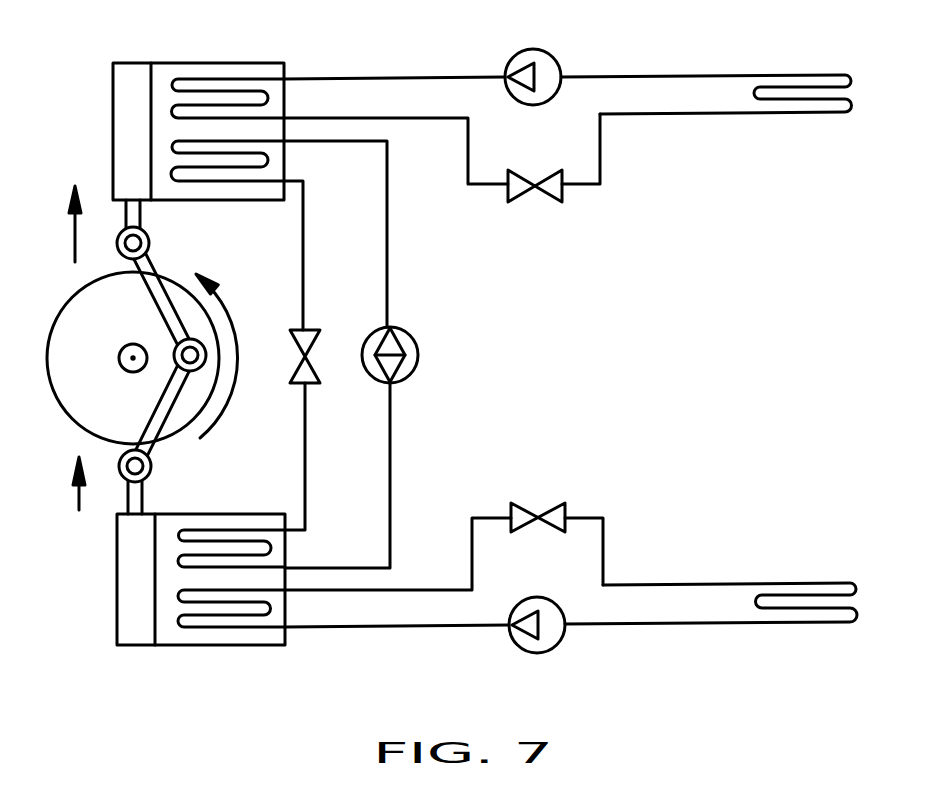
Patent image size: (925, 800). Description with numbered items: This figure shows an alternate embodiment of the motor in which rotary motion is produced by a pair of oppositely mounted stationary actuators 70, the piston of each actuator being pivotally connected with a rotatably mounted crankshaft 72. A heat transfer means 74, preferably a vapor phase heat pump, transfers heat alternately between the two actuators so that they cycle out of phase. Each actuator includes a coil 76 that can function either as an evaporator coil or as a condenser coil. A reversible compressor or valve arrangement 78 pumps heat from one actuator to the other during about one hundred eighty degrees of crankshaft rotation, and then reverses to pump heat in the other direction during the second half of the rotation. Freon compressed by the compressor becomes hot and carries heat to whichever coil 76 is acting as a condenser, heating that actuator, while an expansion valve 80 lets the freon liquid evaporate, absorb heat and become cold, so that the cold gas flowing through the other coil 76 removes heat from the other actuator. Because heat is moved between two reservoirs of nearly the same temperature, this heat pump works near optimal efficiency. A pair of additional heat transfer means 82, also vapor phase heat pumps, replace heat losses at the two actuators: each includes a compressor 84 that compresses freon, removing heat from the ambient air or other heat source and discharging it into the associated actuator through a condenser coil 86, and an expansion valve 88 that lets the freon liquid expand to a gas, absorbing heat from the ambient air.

The stationary actuator 70 is at (156, 359).
The crankshaft 72 is at (137, 344).
The heat transfer means 74 is at (453, 354).
The coil 76 is at (247, 200).
The reversible compressor or valve arrangement 78 is at (413, 370).
The expansion valve 80 is at (317, 383).
The additional heat transfer means 82 is at (570, 350).
The compressor 84 is at (550, 52).
The condenser coil 86 is at (216, 79).
The expansion valve 88 is at (557, 198).